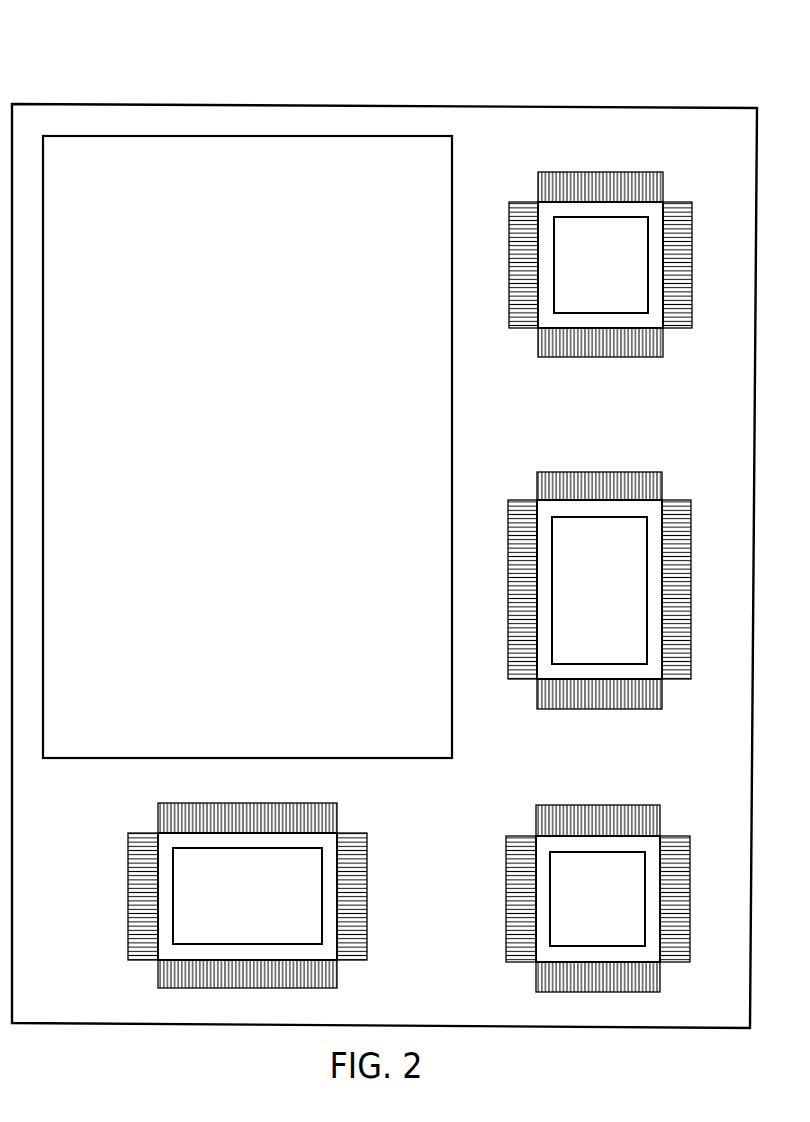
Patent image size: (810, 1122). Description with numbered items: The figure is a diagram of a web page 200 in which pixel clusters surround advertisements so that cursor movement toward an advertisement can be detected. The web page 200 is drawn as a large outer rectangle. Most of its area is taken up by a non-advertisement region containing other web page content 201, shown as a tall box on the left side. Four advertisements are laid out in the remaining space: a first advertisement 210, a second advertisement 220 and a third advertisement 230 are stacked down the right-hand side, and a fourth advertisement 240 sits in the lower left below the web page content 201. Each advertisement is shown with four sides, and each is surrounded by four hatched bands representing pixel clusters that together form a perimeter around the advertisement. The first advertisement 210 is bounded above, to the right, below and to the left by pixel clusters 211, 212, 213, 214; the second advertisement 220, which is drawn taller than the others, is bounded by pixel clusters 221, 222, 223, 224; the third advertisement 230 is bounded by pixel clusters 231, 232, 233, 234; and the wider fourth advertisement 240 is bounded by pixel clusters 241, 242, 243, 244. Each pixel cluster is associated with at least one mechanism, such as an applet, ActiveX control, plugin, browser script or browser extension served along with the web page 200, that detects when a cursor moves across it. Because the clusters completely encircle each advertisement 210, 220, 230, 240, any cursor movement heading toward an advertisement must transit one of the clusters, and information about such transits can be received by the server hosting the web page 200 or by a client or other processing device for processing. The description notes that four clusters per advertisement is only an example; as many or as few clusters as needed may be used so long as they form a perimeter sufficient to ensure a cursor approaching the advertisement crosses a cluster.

The web page 200 is at (89, 64).
The web page content 201 is at (229, 536).
The first advertisement 210 is at (583, 284).
The pixel cluster 211 is at (598, 177).
The pixel cluster 212 is at (678, 203).
The pixel cluster 213 is at (597, 352).
The pixel cluster 214 is at (523, 203).
The second advertisement 220 is at (581, 611).
The pixel cluster 221 is at (597, 474).
The pixel cluster 222 is at (677, 502).
The pixel cluster 223 is at (600, 706).
The pixel cluster 224 is at (523, 503).
The third advertisement 230 is at (579, 922).
The pixel cluster 231 is at (595, 809).
The pixel cluster 232 is at (675, 838).
The pixel cluster 233 is at (538, 973).
The pixel cluster 234 is at (521, 838).
The fourth advertisement 240 is at (230, 915).
The pixel cluster 241 is at (333, 819).
The pixel cluster 242 is at (364, 905).
The pixel cluster 243 is at (333, 972).
The pixel cluster 244 is at (131, 896).